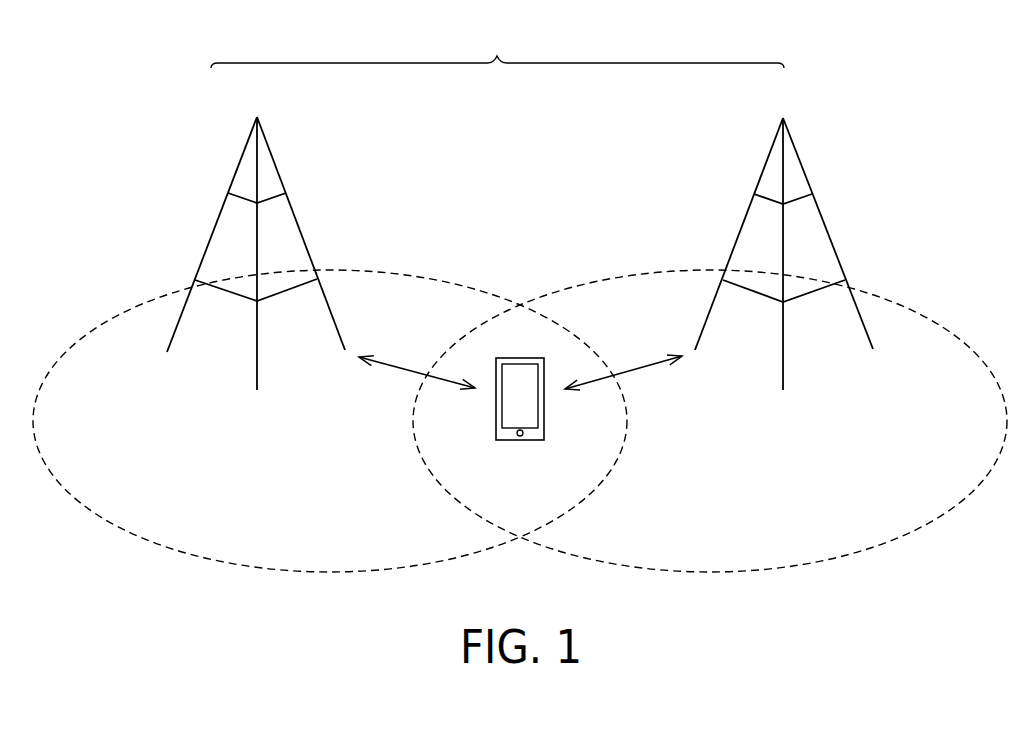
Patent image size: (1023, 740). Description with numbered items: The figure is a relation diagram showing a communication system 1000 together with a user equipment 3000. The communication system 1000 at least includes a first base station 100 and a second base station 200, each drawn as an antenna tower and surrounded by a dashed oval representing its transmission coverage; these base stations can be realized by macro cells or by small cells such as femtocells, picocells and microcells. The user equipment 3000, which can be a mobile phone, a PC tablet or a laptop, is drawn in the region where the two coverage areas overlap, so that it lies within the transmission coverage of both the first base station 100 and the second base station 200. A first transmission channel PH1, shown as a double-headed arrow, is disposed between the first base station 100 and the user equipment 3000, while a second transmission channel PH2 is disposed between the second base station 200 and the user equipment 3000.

The communication system 1000 is at (497, 48).
The first base station 100 is at (244, 153).
The second base station 200 is at (768, 157).
The user equipment 3000 is at (520, 358).
The first transmission channel PH1 is at (417, 372).
The second transmission channel PH2 is at (612, 373).